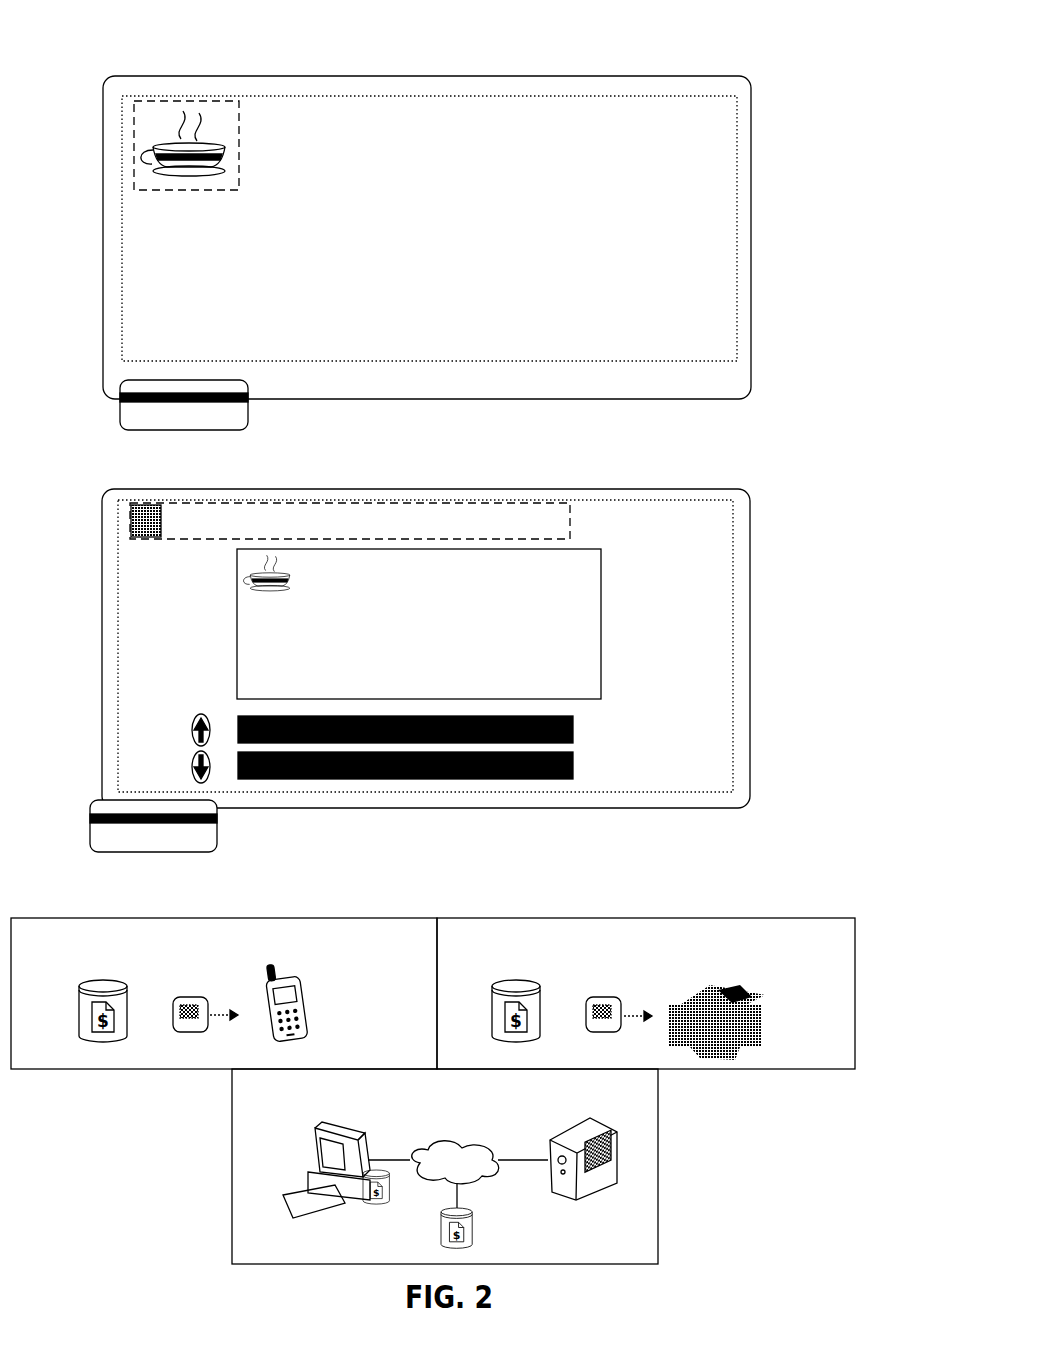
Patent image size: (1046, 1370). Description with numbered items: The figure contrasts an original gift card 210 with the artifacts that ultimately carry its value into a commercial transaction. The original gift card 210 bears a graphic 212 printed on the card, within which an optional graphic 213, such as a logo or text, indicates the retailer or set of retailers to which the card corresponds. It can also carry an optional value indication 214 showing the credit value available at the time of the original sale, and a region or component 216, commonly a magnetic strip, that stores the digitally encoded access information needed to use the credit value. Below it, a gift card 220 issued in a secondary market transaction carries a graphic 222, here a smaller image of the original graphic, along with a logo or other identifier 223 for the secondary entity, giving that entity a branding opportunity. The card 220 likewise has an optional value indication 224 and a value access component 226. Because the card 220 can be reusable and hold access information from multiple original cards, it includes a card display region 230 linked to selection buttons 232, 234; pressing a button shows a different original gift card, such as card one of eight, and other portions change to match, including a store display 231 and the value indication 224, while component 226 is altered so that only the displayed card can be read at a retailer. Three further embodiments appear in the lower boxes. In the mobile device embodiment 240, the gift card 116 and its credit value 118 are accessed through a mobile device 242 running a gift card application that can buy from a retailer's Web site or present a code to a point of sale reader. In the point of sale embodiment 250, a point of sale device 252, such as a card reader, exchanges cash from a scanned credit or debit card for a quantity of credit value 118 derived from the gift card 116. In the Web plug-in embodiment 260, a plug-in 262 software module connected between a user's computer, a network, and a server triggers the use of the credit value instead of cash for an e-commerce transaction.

The original gift card 210 is at (418, 76).
The graphic 212 is at (585, 362).
The optional graphic 213 is at (240, 160).
The value indication 214 is at (617, 122).
The value access component 216 is at (248, 380).
The gift card 220 is at (418, 489).
The graphic 222 is at (528, 792).
The secondary entity identifier 223 is at (150, 537).
The value indication 224 is at (642, 522).
The value access component 226 is at (217, 840).
The card display region 230 is at (575, 733).
The store display 231 is at (575, 769).
The selection button 232 is at (192, 730).
The selection button 234 is at (192, 767).
The mobile device embodiment 240 is at (326, 942).
The point of sale embodiment 250 is at (737, 942).
The web plug-in embodiment 260 is at (492, 1096).
The gift card 116 is at (175, 1005).
The credit value 118 is at (203, 1030).
The mobile device 242 is at (302, 990).
The point of sale device 252 is at (750, 998).
The plug-in 262 is at (375, 1207).